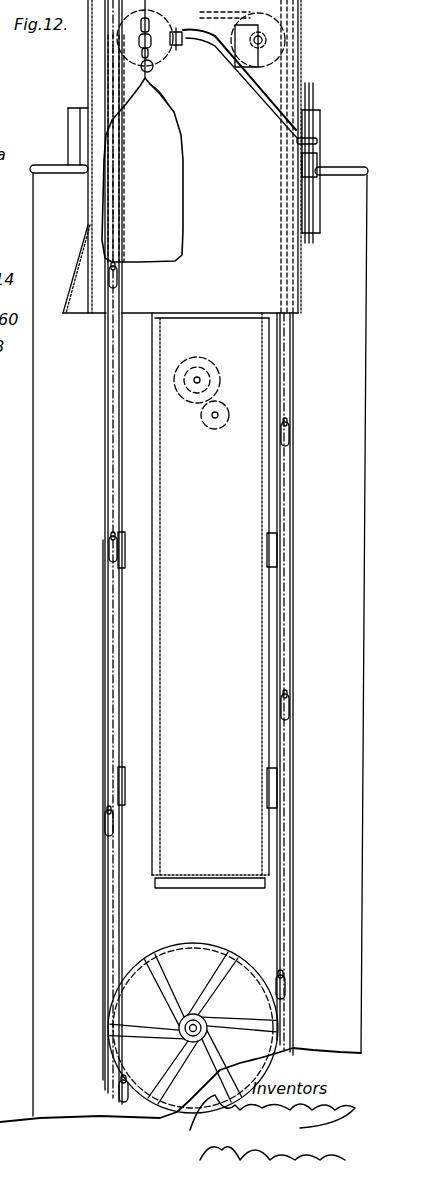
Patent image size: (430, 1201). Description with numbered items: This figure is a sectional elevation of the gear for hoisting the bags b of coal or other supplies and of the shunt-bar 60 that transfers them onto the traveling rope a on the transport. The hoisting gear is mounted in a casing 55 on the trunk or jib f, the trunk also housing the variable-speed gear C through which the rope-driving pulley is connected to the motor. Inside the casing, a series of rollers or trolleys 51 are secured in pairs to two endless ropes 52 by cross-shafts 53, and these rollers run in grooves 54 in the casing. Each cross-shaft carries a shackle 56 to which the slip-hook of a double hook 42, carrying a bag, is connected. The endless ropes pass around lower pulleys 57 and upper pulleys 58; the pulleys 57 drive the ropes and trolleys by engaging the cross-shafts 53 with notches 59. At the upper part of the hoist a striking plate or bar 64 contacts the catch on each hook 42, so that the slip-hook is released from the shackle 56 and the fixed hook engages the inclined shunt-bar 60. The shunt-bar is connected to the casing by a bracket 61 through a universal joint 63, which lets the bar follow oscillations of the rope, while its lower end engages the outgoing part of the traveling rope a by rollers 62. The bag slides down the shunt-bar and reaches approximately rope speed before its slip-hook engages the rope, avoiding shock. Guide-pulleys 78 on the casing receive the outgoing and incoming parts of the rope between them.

The double hook 42 is at (140, 28).
The striking plate or bar 64 is at (242, 33).
The bracket 61 is at (180, 42).
The pulleys 58 is at (154, 66).
The universal joint 63 is at (164, 84).
The shunt-bar 60 is at (254, 84).
The guide-pulleys 78 is at (313, 97).
The rollers 62 is at (312, 172).
The casing 55 is at (300, 302).
The endless ropes 52 is at (112, 492).
The rollers or trolleys 51 is at (110, 538).
The cross-shafts 53 is at (108, 548).
The shackle 56 is at (104, 566).
The grooves 54 is at (114, 690).
The pulleys 57 is at (194, 943).
The notches 59 is at (275, 978).
The traveling rope a is at (318, 166).
The bags b is at (142, 148).
The variable-speed gear C is at (210, 600).
The trunk or jib f is at (184, 643).